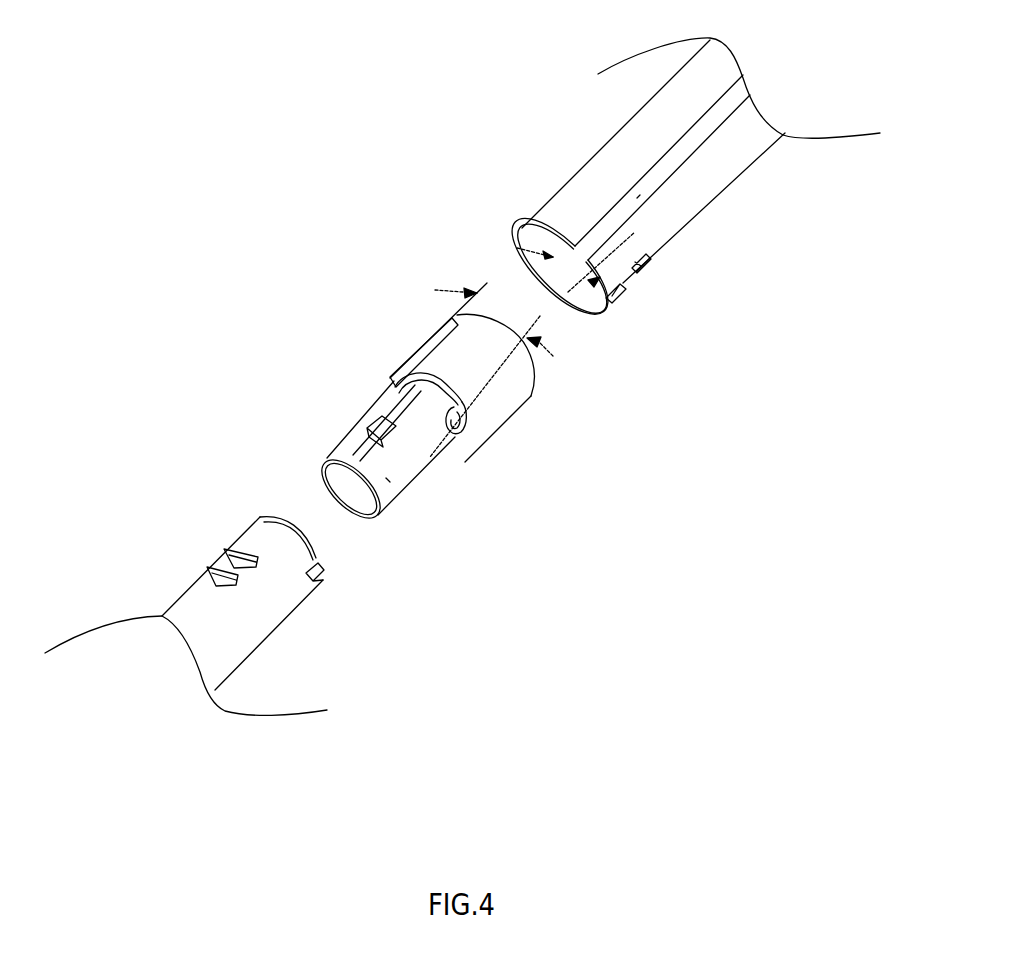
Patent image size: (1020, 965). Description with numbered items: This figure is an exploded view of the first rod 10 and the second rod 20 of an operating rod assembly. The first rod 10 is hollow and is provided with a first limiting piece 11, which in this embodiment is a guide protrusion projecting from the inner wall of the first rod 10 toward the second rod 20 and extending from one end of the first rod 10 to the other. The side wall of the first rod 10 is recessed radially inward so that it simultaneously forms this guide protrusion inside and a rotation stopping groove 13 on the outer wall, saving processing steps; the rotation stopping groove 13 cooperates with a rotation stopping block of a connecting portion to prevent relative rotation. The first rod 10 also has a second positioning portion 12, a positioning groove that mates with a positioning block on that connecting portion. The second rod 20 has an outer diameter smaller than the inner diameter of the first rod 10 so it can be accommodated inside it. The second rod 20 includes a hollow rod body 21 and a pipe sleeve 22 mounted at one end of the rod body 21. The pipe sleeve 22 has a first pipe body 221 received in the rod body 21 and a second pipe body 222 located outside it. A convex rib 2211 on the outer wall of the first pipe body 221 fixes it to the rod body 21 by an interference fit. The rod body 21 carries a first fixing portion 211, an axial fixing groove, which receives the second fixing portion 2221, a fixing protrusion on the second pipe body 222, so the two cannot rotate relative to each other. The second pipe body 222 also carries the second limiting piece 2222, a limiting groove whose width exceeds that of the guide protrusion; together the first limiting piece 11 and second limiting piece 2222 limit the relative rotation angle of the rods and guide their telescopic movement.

The first rod 10 is at (696, 164).
The first limiting piece 11 is at (579, 246).
The second positioning portion 12 is at (641, 277).
The rotation stopping groove 13 is at (637, 198).
The second rod 20 is at (250, 621).
The rod body 21 is at (288, 582).
The first fixing portion 211 is at (262, 517).
The pipe sleeve 22 is at (456, 451).
The first pipe body 221 is at (362, 492).
The convex rib 2211 is at (388, 482).
The second pipe body 222 is at (481, 419).
The second fixing portion 2221 is at (464, 432).
The second limiting piece 2222 is at (437, 363).